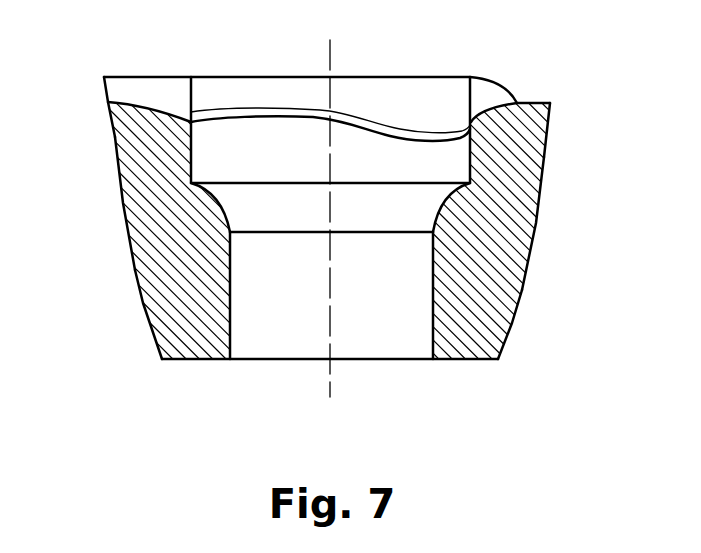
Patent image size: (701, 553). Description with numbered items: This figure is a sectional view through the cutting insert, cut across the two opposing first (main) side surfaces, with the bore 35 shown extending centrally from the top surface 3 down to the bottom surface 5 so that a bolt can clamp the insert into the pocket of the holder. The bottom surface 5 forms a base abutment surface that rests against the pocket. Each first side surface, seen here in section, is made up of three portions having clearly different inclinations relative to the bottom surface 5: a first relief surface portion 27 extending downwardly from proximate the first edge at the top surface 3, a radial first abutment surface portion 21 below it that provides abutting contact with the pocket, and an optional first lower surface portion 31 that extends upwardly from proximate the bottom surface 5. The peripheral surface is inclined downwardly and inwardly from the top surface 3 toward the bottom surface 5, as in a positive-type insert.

The top surface 3 is at (378, 92).
The bottom surface 5 is at (298, 360).
The first abutment surface portion 21 is at (121, 198).
The first relief surface portion 27 is at (110, 113).
The first lower surface portion 31 is at (141, 298).
The bore 35 is at (282, 145).